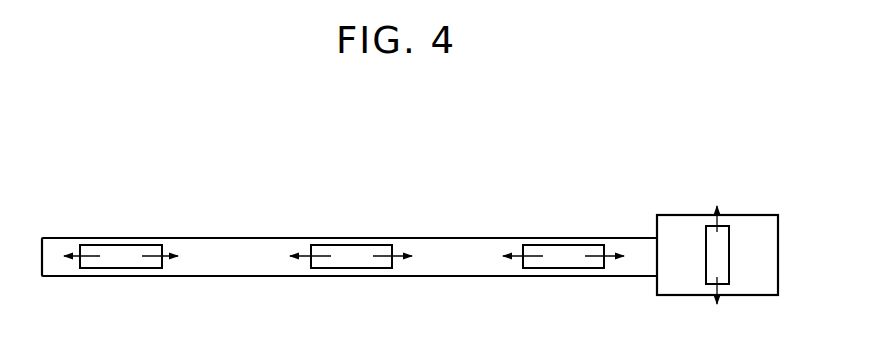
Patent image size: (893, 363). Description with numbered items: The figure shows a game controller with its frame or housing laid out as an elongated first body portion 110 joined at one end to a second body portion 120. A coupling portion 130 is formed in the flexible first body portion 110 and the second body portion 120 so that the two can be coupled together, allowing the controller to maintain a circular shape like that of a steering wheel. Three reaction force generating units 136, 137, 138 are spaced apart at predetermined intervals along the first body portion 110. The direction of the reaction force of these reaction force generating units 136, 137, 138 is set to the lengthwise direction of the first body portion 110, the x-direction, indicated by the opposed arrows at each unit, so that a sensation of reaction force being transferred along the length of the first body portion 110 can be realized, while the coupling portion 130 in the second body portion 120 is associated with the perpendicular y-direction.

The first body portion 110 is at (455, 238).
The second body portion 120 is at (762, 223).
The coupling portion 130 is at (710, 242).
The reaction force generating unit 136 is at (120, 250).
The reaction force generating unit 137 is at (350, 250).
The reaction force generating unit 138 is at (562, 250).